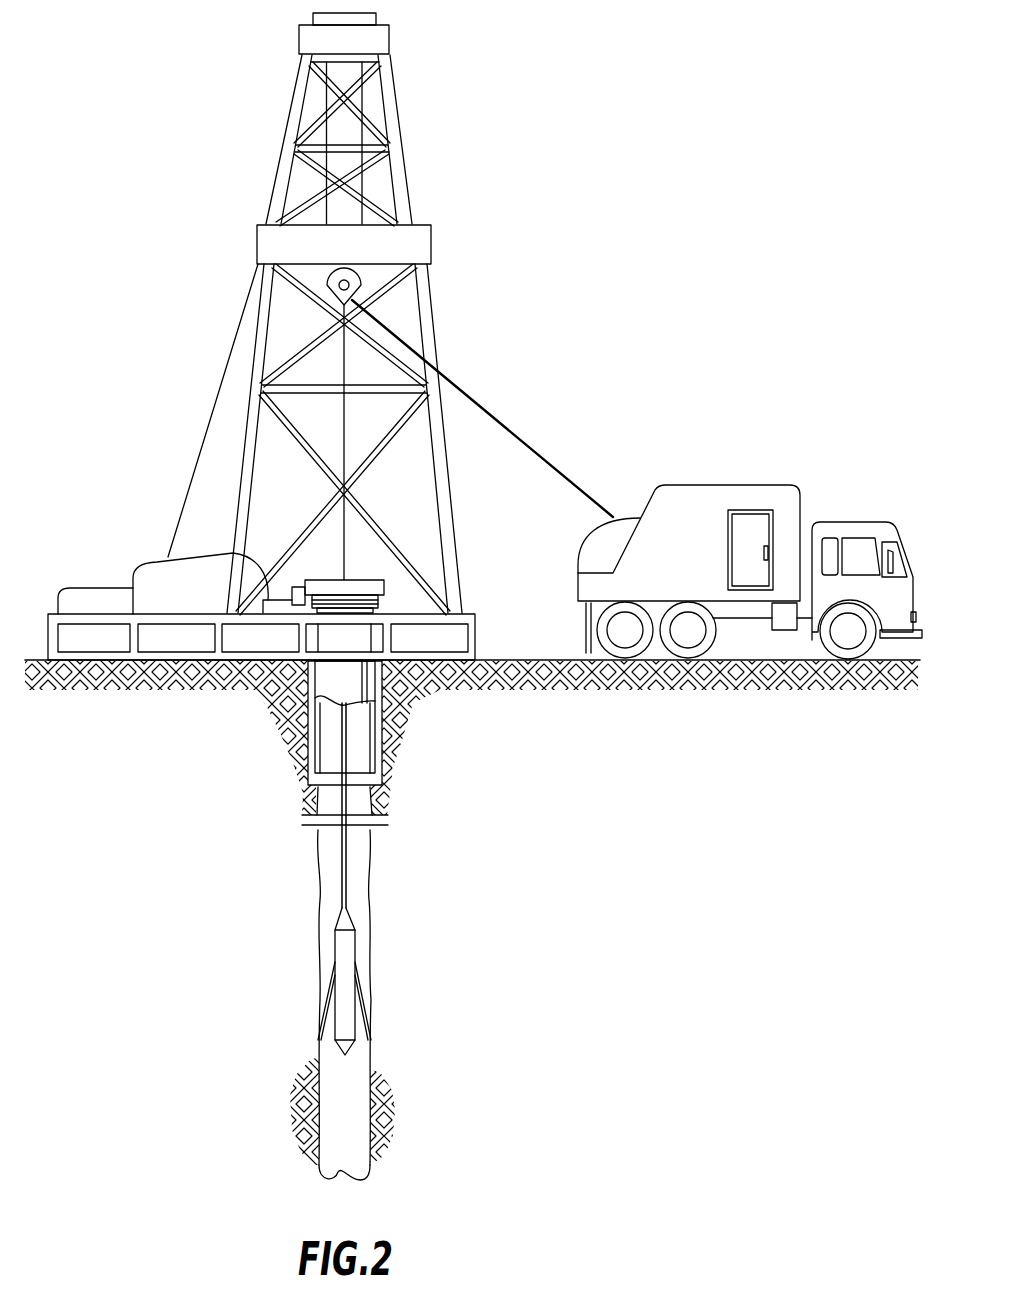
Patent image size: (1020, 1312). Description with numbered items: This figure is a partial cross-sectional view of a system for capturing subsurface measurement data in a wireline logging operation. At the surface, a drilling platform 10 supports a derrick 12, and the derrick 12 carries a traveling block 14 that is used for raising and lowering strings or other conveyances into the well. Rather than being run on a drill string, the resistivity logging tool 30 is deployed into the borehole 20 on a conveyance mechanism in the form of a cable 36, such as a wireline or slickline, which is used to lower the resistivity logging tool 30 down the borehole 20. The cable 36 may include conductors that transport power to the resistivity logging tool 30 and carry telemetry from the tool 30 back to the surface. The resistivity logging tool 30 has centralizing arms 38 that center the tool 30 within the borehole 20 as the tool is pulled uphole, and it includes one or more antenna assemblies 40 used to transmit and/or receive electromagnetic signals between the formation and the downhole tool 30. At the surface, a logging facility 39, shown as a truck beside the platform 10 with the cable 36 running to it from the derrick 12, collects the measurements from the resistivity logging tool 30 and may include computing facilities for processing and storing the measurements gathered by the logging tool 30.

The drilling platform 10 is at (48, 628).
The derrick 12 is at (398, 93).
The traveling block 14 is at (357, 285).
The borehole 20 is at (322, 888).
The resistivity logging tool 30 is at (344, 981).
The cable 36 is at (507, 430).
The centralizing arms 38 is at (363, 1000).
The logging facility 39 is at (760, 484).
The antenna assembly 40 is at (335, 947).